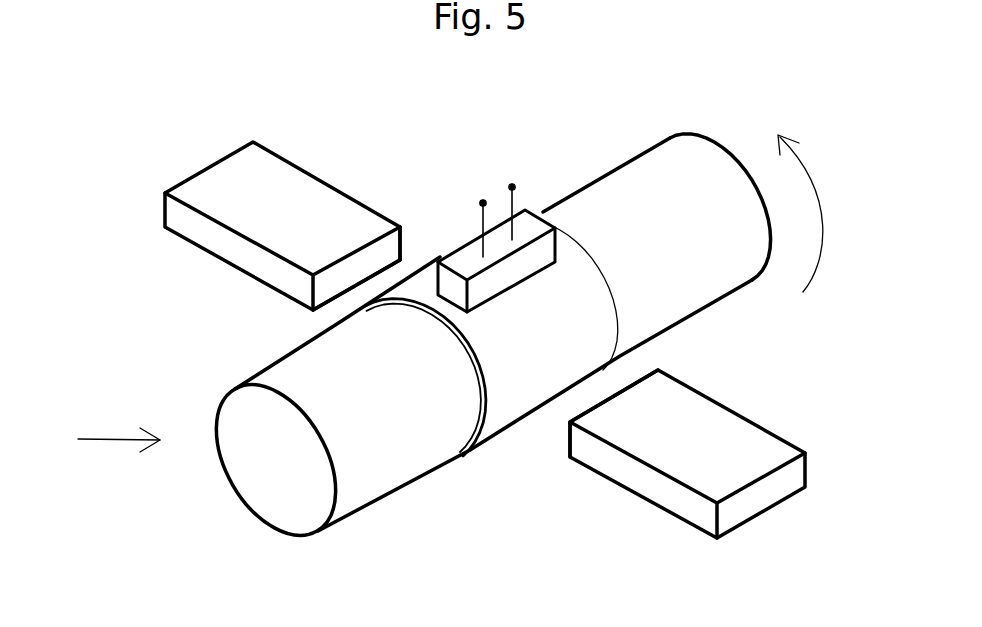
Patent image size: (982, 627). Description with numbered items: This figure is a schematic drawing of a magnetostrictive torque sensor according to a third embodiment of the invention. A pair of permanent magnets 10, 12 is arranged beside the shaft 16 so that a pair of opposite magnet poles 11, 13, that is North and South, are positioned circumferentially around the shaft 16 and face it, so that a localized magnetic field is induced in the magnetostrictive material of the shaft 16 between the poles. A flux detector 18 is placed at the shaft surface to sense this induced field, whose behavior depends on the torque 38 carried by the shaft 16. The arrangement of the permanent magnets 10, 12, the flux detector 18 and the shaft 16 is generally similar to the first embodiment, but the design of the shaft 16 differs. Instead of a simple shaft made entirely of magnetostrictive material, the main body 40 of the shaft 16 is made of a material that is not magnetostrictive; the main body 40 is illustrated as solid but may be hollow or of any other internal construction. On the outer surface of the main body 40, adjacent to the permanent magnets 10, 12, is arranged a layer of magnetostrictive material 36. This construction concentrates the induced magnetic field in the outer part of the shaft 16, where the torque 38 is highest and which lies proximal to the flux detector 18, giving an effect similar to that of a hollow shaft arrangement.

The permanent magnet 10 is at (248, 252).
The magnet pole 11 is at (377, 262).
The permanent magnet 12 is at (657, 487).
The magnet pole 13 is at (617, 387).
The shaft 16 is at (68, 453).
The flux detector 18 is at (535, 228).
The layer of magnetostrictive material 36 is at (587, 323).
The torque 38 is at (824, 213).
The main body 40 is at (297, 381).